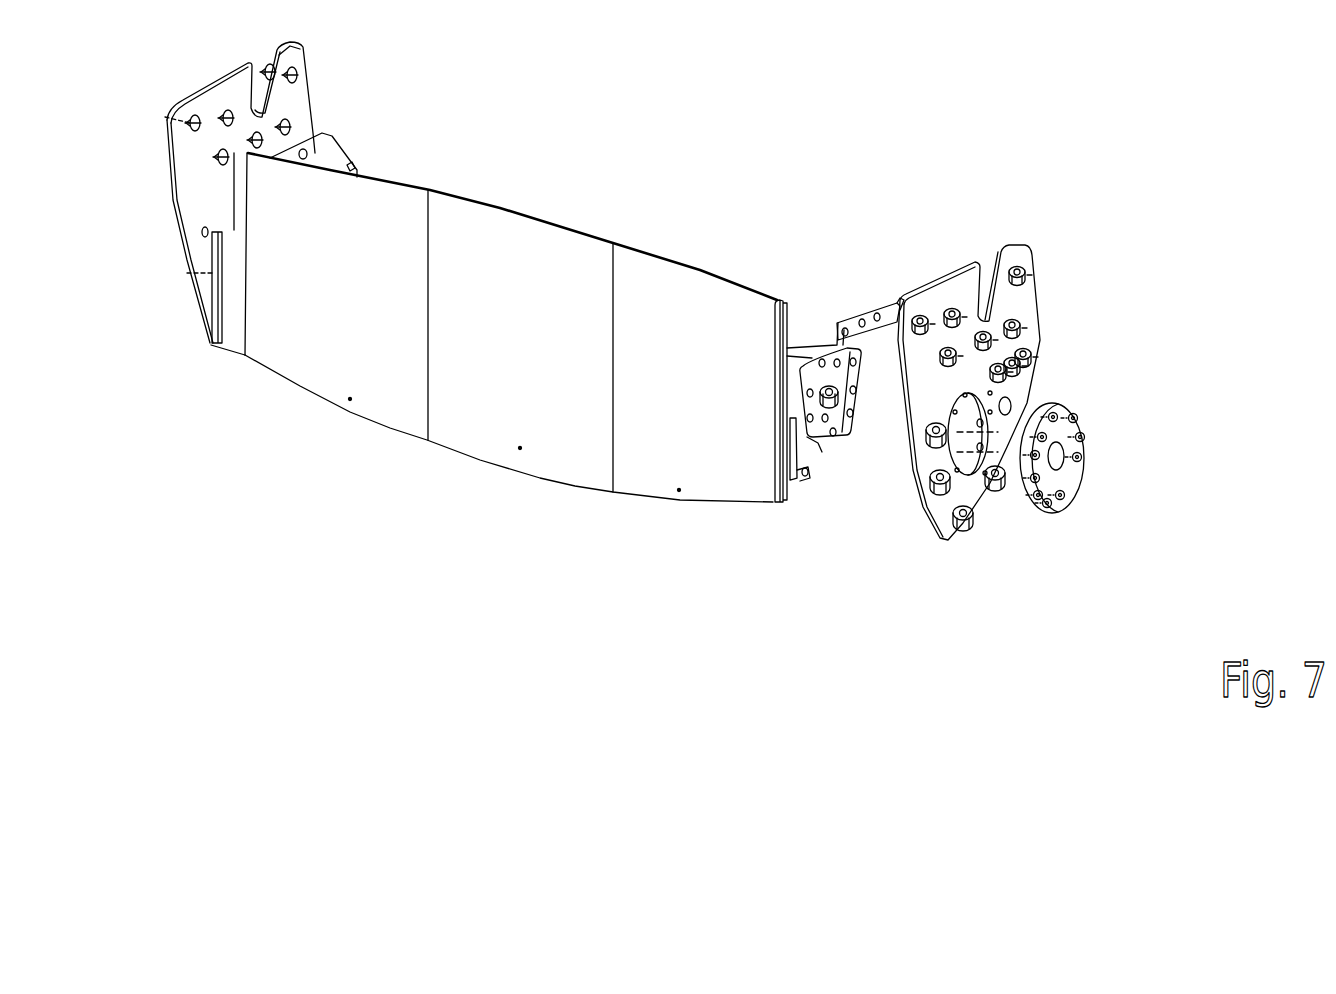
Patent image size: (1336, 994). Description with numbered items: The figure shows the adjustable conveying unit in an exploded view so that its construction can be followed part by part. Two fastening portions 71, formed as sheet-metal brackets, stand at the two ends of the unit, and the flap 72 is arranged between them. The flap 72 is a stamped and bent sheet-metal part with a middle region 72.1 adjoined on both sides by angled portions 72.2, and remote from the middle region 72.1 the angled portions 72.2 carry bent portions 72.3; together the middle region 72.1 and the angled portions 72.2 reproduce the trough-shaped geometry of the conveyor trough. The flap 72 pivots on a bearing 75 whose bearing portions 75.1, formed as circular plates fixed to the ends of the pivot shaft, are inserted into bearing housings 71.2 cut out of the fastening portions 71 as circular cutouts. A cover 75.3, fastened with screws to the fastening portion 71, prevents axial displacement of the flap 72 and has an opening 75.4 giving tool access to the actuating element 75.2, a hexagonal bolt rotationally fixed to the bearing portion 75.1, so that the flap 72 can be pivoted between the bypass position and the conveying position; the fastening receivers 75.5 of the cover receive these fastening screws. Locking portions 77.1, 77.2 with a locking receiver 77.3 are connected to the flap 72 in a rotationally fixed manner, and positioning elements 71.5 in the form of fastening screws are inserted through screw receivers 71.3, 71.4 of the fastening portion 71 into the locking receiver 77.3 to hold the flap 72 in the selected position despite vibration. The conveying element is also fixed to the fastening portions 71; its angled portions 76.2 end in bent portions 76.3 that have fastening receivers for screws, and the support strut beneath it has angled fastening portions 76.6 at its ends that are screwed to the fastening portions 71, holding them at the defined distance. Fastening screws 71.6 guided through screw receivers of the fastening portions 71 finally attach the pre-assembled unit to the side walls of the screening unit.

The fastening portion 71 is at (187, 180).
The bearing housing 71.2 is at (977, 403).
The screw receiver 71.3 is at (937, 445).
The screw receiver 71.4 is at (957, 530).
The positioning element 71.5 is at (1007, 487).
The fastening screw 71.6 is at (999, 274).
The flap 72 is at (504, 298).
The middle region 72.1 is at (472, 235).
The angled portion 72.2 is at (380, 203).
The bent portion 72.3 is at (780, 315).
The bearing 75 is at (998, 450).
The bearing portion 75.1 is at (822, 355).
The actuating element 75.2 is at (838, 402).
The cover 75.3 is at (1070, 477).
The opening 75.4 is at (1063, 450).
The disc bolt holes 75.5 is at (1080, 432).
The angled portion 76.2 is at (835, 330).
The bent portion 76.3 is at (862, 320).
The angled fastening portion 76.6 is at (900, 305).
The locking portion 77.1 is at (798, 457).
The locking portion 77.2 is at (837, 440).
The locking receiver 77.3 is at (817, 443).